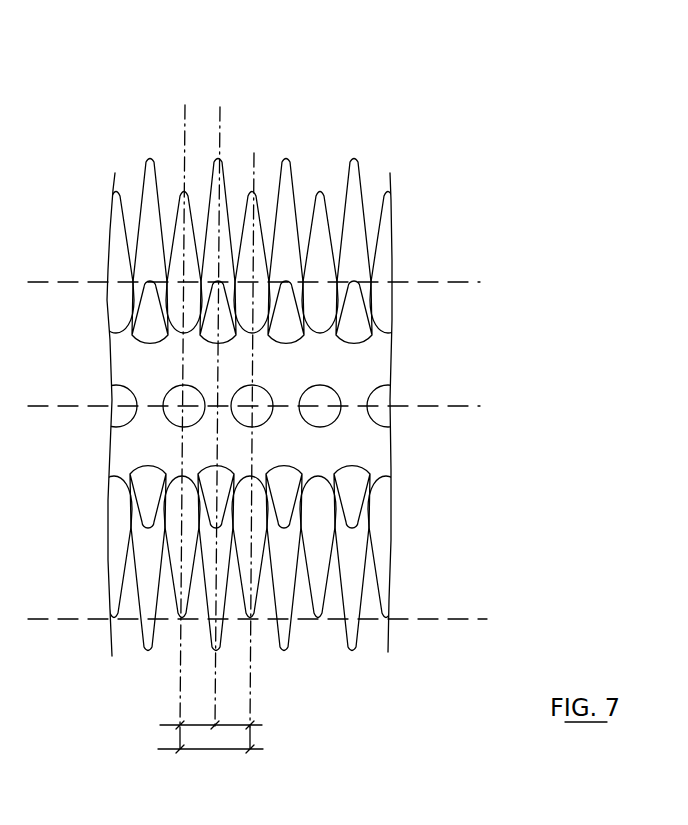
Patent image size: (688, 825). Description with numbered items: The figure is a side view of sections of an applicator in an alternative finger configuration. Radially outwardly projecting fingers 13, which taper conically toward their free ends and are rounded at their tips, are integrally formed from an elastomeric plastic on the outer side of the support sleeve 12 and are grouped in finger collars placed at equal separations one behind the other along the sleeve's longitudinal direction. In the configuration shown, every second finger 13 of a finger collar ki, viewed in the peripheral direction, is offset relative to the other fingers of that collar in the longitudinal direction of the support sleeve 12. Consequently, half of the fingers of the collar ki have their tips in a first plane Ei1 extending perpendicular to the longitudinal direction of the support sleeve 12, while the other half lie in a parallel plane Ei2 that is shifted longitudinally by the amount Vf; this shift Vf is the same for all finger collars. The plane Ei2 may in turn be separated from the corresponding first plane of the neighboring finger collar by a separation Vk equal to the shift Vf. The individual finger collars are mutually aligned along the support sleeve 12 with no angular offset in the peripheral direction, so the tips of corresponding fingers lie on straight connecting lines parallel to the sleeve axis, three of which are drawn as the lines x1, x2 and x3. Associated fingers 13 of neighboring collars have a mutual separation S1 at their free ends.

The support sleeve 12 is at (126, 434).
The fingers 13 is at (160, 478).
The connecting line x1 is at (472, 273).
The connecting line x2 is at (470, 402).
The connecting line x3 is at (483, 610).
The first plane Ei1 is at (197, 102).
The second plane Ei2 is at (220, 108).
The finger collar ki is at (202, 190).
The shift Vf is at (189, 727).
The separation Vk is at (238, 727).
The mutual separation S1 is at (210, 761).